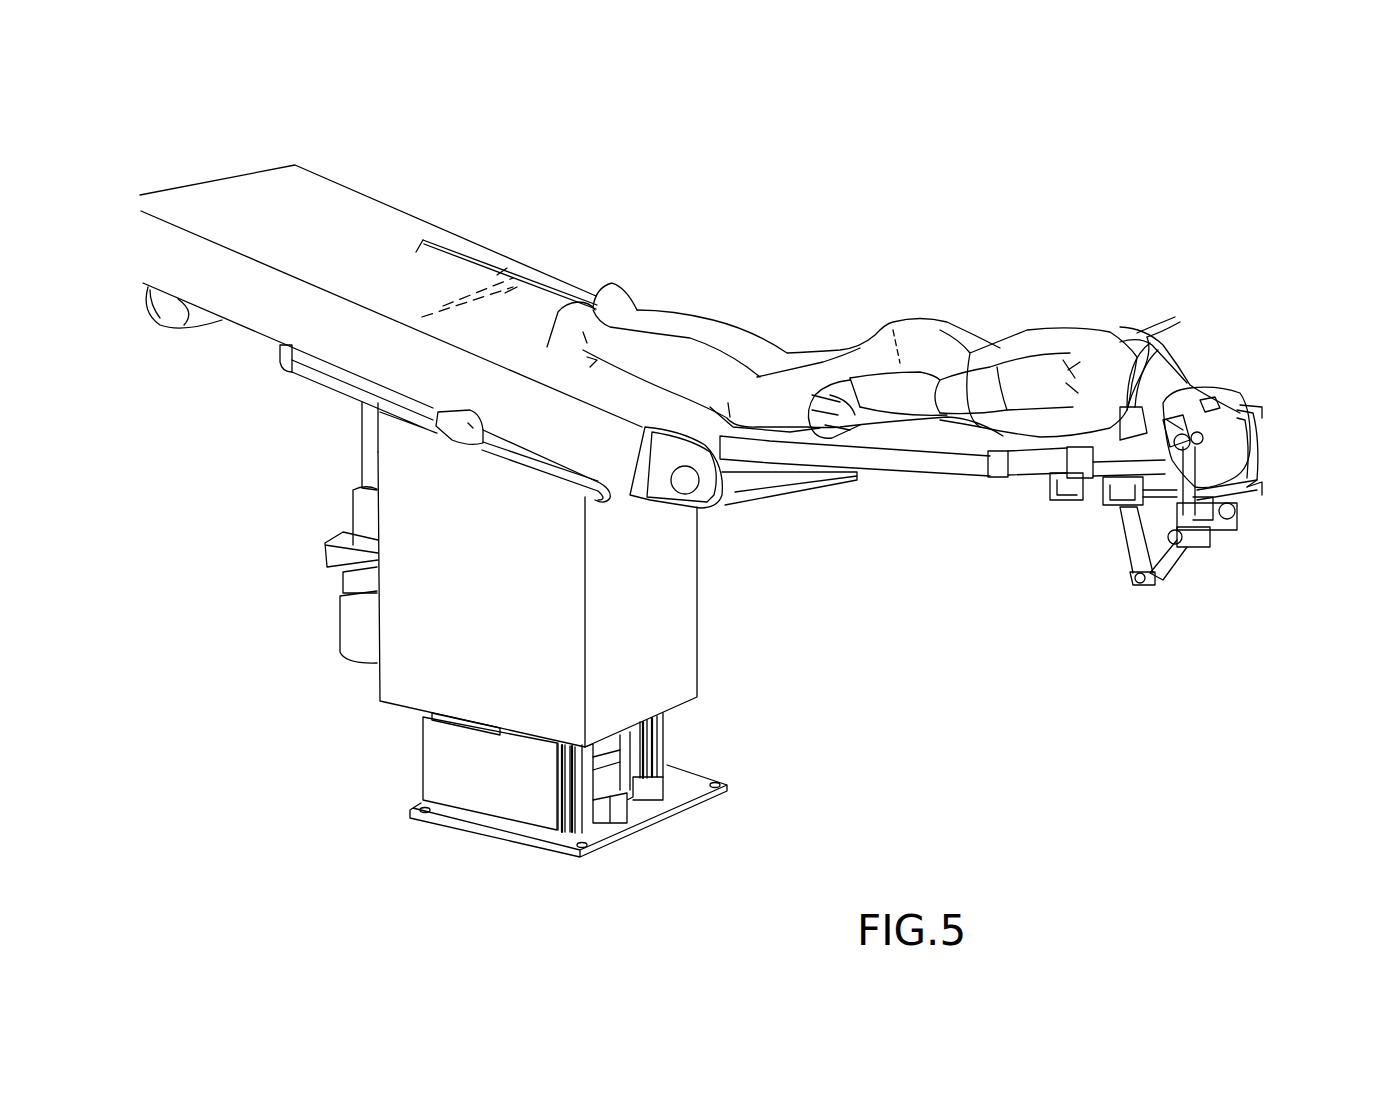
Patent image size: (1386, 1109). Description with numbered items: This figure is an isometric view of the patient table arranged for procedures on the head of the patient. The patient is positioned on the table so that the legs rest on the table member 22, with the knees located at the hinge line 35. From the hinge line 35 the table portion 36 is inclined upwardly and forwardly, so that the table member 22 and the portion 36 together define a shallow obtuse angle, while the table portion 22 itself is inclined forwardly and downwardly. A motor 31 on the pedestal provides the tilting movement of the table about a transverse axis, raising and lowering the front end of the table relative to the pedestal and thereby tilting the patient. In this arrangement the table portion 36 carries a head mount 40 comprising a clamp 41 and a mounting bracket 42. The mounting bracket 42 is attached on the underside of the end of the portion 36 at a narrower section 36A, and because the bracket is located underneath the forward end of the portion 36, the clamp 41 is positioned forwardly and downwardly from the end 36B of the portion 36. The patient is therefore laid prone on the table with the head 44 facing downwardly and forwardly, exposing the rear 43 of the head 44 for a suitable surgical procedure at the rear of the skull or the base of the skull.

The table member 22 is at (395, 225).
The motor 31 is at (370, 613).
The hinge line 35 is at (699, 482).
The table portion 36 is at (942, 472).
The narrower section 36A is at (1033, 472).
The end of the portion 36B is at (1147, 335).
The head mount 40 is at (1095, 586).
The clamp 41 is at (1260, 460).
The mounting bracket 42 is at (1177, 565).
The rear of the head 43 is at (1208, 412).
The head 44 is at (1227, 447).